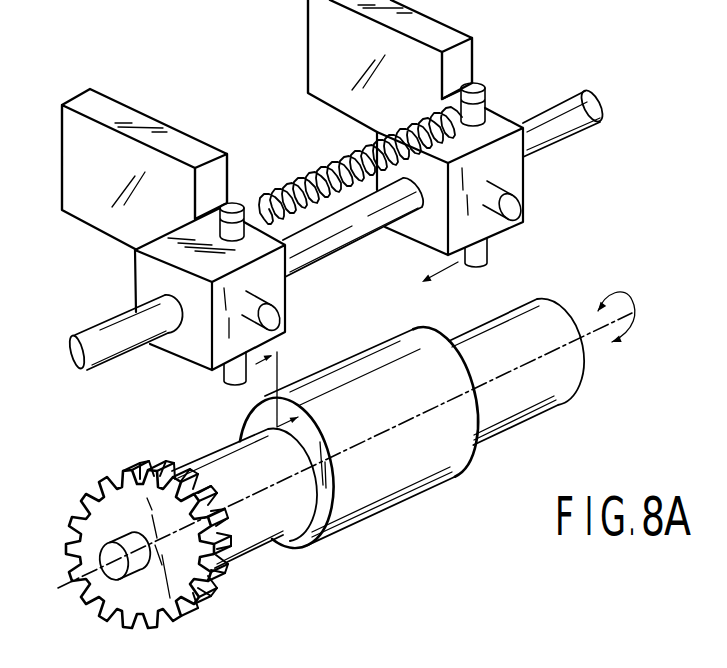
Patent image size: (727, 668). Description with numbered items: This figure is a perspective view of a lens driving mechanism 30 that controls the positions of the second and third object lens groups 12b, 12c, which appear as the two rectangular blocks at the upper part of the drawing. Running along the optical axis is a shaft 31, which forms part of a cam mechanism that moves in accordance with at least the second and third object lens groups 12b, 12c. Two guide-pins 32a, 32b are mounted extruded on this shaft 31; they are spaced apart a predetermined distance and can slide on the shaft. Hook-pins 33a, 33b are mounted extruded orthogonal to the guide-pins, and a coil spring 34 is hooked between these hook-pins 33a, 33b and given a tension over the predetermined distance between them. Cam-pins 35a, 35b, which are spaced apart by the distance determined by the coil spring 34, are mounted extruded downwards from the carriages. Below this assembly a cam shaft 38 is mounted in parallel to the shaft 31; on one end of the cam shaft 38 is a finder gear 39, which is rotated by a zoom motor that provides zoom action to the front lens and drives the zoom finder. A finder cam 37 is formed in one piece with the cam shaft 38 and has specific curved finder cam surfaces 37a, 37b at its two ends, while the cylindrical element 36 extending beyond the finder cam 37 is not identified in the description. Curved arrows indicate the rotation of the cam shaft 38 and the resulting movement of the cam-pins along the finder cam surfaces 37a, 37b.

The second object lens group 12b is at (77, 136).
The third object lens group 12c is at (313, 27).
The lens driving mechanism 30 is at (607, 417).
The shaft 31 is at (110, 327).
The guide-pin 32a is at (272, 312).
The guide-pin 32b is at (505, 193).
The hook-pin 33a is at (197, 222).
The hook-pin 33b is at (460, 98).
The coil spring 34 is at (323, 168).
The cam-pin 35a is at (228, 387).
The cam-pin 35b is at (484, 252).
The roller shaft 36 is at (490, 332).
The finder cam 37 is at (403, 463).
The finder cam surface 37a is at (328, 533).
The finder cam surface 37b is at (477, 417).
The cam shaft 38 is at (252, 536).
The finder gear 39 is at (177, 607).